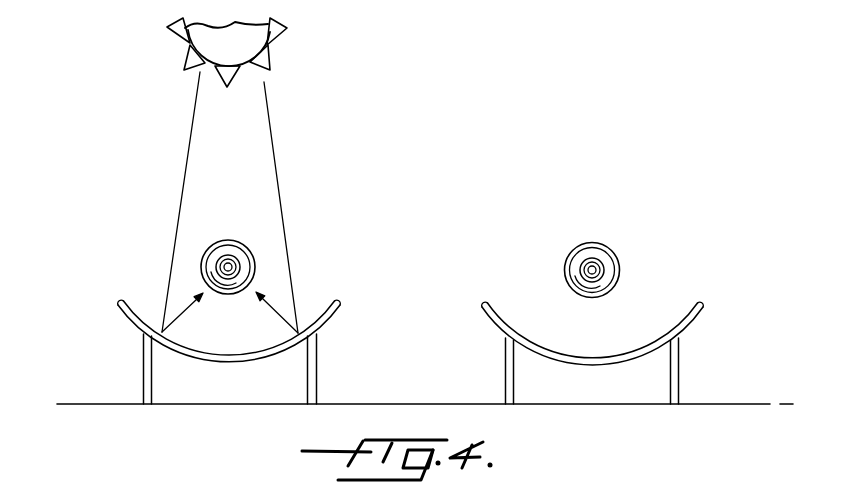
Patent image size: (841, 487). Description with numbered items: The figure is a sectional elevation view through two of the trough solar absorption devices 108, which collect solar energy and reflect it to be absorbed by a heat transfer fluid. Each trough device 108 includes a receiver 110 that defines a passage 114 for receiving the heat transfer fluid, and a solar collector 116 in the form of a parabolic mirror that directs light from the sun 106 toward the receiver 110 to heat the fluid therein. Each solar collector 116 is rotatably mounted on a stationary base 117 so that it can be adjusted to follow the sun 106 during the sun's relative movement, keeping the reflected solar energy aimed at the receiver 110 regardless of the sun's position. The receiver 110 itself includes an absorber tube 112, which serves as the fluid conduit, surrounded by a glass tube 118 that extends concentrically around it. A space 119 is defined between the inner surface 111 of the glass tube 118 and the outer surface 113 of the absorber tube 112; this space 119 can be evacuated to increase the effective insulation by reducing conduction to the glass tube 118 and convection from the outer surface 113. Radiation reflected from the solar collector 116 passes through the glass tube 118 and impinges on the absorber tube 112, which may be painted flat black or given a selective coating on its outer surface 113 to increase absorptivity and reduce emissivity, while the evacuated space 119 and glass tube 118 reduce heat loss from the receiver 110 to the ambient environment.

The sun 106 is at (197, 40).
The trough solar absorption device 108 is at (399, 238).
The receiver 110 is at (397, 246).
The inner surface of the glass tube 111 is at (203, 270).
The absorber tube 112 is at (203, 248).
The outer surface of the absorber tube 113 is at (238, 288).
The passage 114 is at (232, 262).
The solar collector 116 is at (323, 327).
The stationary base 117 is at (143, 363).
The glass tube 118 is at (271, 260).
The space 119 is at (240, 258).